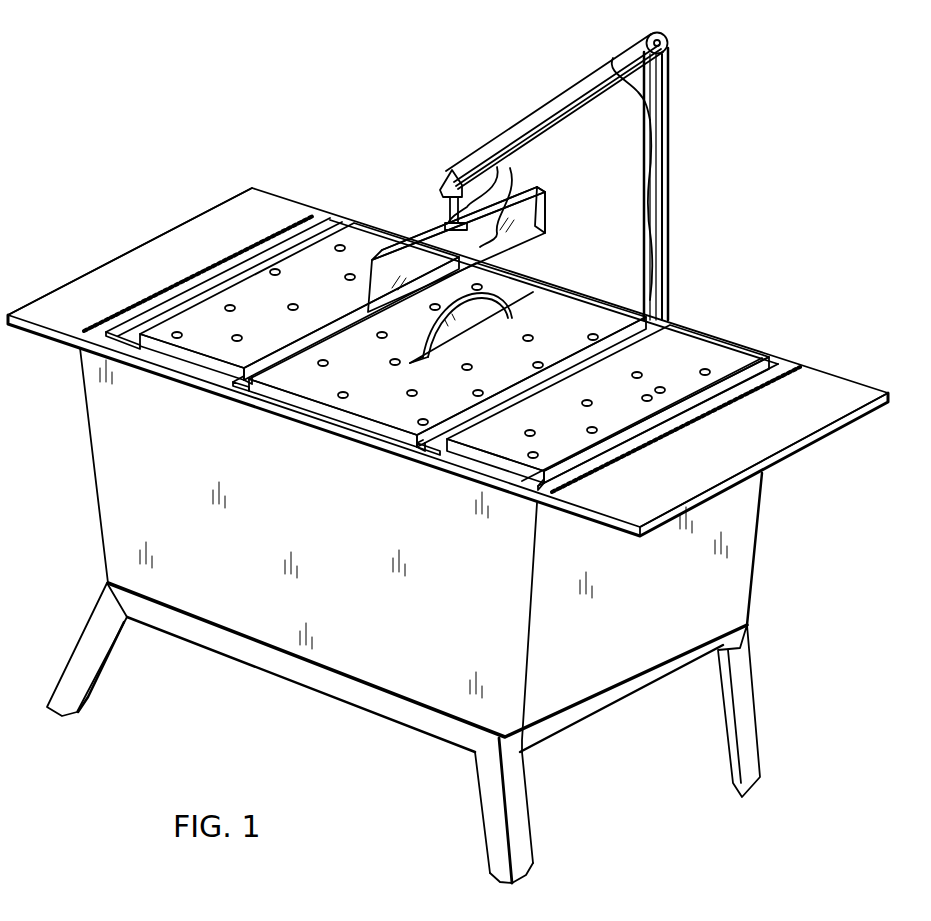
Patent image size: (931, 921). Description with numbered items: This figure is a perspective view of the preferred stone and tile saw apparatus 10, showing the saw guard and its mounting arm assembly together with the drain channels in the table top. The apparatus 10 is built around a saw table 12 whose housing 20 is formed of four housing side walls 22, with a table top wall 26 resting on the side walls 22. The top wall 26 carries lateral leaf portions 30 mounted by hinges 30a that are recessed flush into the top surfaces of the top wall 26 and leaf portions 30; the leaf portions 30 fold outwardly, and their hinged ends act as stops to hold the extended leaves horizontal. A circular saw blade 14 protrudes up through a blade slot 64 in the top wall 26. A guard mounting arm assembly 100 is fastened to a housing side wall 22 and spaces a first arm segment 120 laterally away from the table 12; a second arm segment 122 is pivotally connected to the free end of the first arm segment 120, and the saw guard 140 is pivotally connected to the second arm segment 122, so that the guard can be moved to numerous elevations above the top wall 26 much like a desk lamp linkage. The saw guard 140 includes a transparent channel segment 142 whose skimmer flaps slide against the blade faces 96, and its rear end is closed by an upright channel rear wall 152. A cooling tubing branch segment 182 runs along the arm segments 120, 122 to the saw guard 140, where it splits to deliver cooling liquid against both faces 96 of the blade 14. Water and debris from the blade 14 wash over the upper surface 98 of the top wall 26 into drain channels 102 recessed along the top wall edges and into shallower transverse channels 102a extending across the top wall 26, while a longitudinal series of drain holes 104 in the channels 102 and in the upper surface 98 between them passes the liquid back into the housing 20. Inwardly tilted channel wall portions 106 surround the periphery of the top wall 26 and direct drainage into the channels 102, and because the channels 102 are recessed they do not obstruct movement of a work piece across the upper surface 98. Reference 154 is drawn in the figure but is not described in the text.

The stone and tile saw apparatus 10 is at (243, 125).
The saw table 12 is at (137, 236).
The saw blade 14 is at (462, 326).
The housing 20 is at (607, 673).
The housing side walls 22 is at (752, 525).
The table top wall 26 is at (307, 257).
The lateral leaf portions 30 is at (185, 230).
The hinges 30a is at (208, 272).
The blade slot 64 is at (434, 358).
The blade faces 96 is at (432, 335).
The upper surface 98 is at (353, 247).
The guard mounting arm assembly 100 is at (526, 65).
The drain channels 102 is at (247, 268).
The transverse channels 102a is at (243, 380).
The drain holes 104 is at (283, 276).
The inwardly tilted channel wall portions 106 is at (140, 307).
The first arm segment 120 is at (670, 168).
The second arm segment 122 is at (518, 125).
The saw guard 140 is at (548, 202).
The transparent channel segment 142 is at (443, 228).
The channel rear wall 152 is at (548, 224).
The block top face 154 is at (522, 190).
The branch segment 182 is at (640, 77).